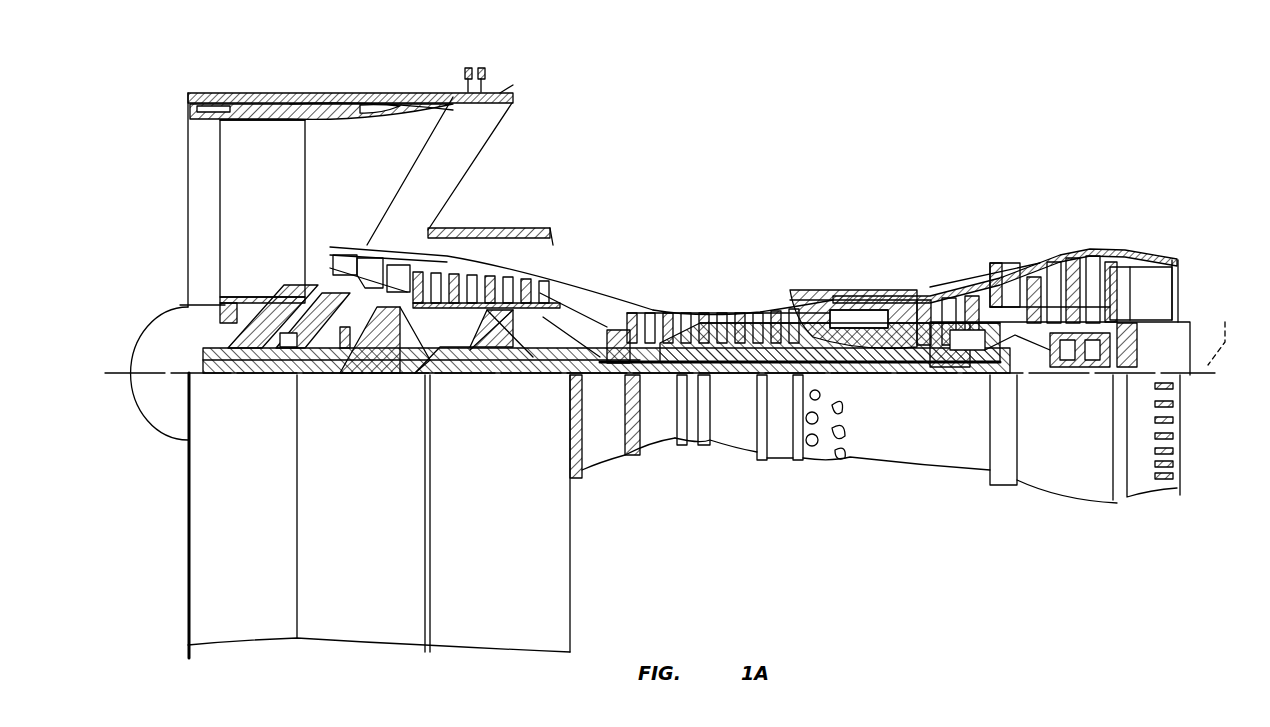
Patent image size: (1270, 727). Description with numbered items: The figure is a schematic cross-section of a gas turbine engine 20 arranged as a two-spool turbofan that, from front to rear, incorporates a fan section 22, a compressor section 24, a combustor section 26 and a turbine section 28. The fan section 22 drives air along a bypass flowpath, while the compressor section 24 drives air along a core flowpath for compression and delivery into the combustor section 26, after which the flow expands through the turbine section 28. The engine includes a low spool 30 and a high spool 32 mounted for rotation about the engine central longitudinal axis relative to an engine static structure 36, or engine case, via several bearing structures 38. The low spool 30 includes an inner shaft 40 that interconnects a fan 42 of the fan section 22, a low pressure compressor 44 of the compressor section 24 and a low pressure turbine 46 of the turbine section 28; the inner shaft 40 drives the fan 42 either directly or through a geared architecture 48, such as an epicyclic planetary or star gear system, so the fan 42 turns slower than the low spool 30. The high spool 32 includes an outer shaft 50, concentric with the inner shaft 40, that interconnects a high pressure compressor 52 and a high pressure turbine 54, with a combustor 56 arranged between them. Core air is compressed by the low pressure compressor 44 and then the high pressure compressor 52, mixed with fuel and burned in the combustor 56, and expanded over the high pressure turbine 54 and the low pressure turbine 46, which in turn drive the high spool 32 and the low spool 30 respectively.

The gas turbine engine 20 is at (1040, 115).
The fan section 22 is at (425, 76).
The compressor section 24 is at (810, 194).
The combustor section 26 is at (905, 194).
The turbine section 28 is at (1120, 194).
The low spool 30 is at (737, 378).
The high spool 32 is at (770, 306).
The engine static structure 36 is at (782, 462).
The bearing structures 38 is at (992, 256).
The inner shaft 40 is at (597, 378).
The fan 42 is at (272, 205).
The low pressure compressor 44 is at (540, 268).
The low pressure turbine 46 is at (1043, 272).
The geared architecture 48 is at (378, 376).
The outer shaft 50 is at (853, 376).
The high pressure compressor 52 is at (712, 315).
The high pressure turbine 54 is at (923, 298).
The combustor 56 is at (855, 300).